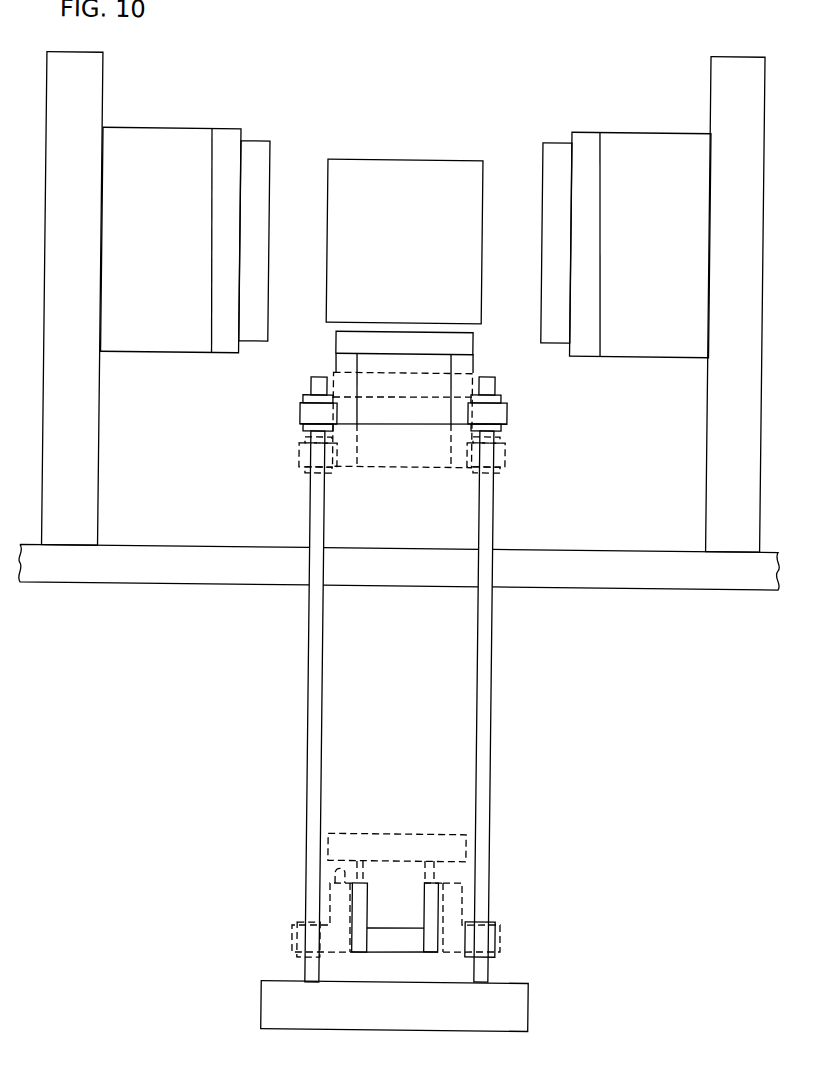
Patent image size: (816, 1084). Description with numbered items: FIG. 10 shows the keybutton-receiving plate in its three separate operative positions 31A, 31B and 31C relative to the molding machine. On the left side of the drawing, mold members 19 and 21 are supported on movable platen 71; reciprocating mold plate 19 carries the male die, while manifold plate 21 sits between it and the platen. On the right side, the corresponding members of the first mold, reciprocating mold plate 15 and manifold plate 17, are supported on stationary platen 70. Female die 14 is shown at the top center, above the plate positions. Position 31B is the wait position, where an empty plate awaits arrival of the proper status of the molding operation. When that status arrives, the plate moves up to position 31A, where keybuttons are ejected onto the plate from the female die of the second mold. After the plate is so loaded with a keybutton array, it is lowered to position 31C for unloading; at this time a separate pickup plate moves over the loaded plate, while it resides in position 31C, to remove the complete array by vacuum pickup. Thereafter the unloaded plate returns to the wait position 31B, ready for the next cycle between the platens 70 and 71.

The movable platen 71 is at (90, 89).
The manifold plate 21 is at (222, 142).
The reciprocating mold plate 19 is at (253, 156).
The female die 14 is at (409, 172).
The stationary platen 70 is at (712, 78).
The manifold plate 17 is at (584, 140).
The reciprocating mold plate 15 is at (554, 155).
The upper operative position of plate 31A is at (460, 344).
The wait position of plate 31B is at (373, 385).
The unloading position of plate 31C is at (450, 846).